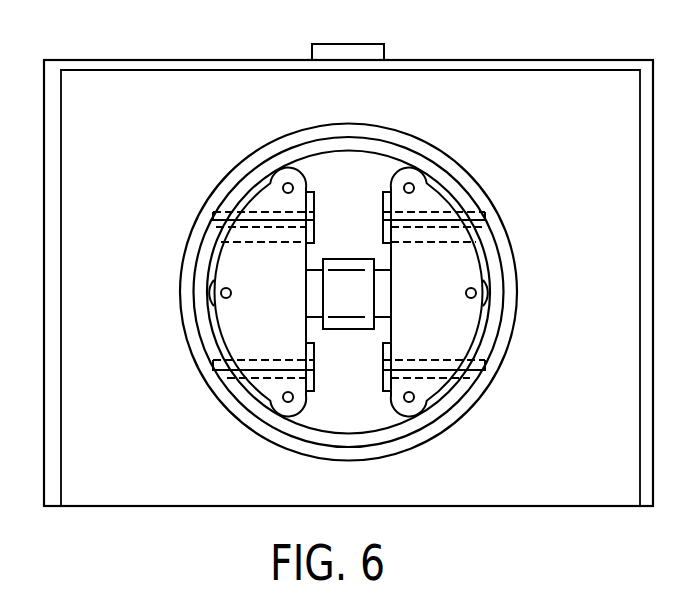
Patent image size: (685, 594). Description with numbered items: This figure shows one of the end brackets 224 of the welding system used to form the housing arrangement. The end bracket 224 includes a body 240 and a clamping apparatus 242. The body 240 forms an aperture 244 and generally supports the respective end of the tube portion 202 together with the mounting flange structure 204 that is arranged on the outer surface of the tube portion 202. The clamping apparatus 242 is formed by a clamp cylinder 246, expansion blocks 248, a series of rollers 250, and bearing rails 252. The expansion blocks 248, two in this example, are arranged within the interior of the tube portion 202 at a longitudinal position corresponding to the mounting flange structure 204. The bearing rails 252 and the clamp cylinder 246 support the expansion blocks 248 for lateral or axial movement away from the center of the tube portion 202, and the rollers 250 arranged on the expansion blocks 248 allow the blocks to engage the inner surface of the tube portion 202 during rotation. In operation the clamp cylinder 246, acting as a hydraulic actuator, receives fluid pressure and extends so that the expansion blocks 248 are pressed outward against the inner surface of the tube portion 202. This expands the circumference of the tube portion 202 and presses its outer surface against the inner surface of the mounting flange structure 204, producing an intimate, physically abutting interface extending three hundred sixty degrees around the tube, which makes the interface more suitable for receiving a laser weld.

The end bracket 224 is at (101, 75).
The body 240 is at (613, 107).
The clamping apparatus 242 is at (222, 134).
The mounting flange structure 204 is at (340, 130).
The tube portion 202 is at (390, 148).
The aperture 244 is at (343, 412).
The expansion blocks 248 is at (234, 331).
The rollers 250 is at (413, 172).
The bearing rails 252 is at (222, 210).
The clamp cylinder 246 is at (350, 258).